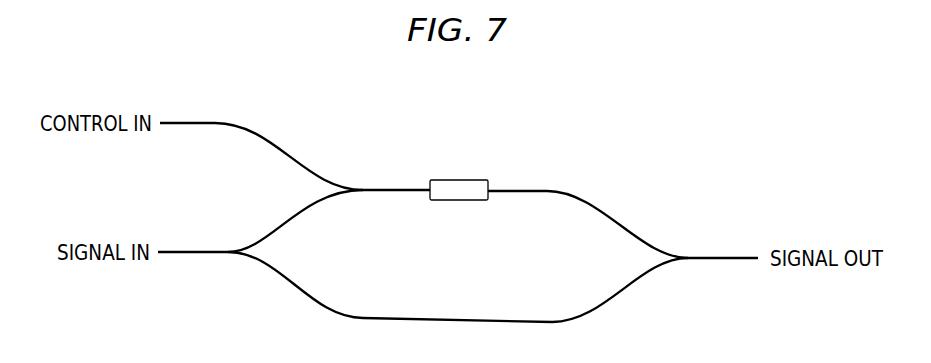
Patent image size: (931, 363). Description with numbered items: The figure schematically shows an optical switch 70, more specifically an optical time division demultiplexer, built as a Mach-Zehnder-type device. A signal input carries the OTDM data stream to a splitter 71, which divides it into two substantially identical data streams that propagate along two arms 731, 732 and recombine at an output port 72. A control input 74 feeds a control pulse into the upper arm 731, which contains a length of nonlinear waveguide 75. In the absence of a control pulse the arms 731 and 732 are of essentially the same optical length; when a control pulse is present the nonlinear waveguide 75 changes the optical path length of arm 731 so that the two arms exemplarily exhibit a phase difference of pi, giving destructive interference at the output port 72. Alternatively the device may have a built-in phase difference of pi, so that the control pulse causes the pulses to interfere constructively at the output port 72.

The optical switch 70 is at (641, 128).
The splitter 71 is at (200, 252).
The output port 72 is at (733, 258).
The control input port 74 is at (205, 123).
The length of nonlinear waveguide 75 is at (480, 180).
The arm 731 is at (318, 206).
The arm 732 is at (313, 296).